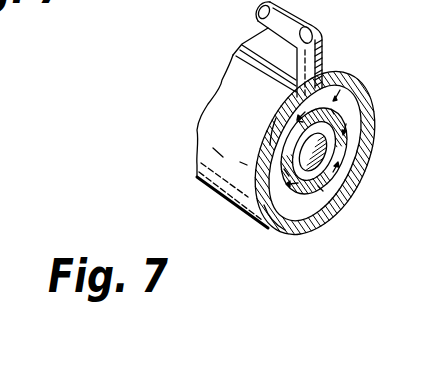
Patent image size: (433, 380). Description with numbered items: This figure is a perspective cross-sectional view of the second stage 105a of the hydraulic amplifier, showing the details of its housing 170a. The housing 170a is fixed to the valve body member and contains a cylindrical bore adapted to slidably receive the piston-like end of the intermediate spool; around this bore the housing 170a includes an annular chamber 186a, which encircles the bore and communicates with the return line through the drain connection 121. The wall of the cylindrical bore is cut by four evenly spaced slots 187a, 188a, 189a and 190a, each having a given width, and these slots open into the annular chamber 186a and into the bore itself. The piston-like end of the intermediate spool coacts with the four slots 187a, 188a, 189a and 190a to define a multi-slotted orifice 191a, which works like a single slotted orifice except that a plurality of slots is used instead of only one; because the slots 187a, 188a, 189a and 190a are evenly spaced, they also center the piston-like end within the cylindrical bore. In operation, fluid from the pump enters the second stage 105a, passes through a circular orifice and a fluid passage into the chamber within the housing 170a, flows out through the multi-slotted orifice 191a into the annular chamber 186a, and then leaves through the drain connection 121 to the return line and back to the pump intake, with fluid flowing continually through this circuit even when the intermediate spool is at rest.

The housing 170a is at (227, 72).
The drain connection 121 is at (310, 37).
The annular chamber 186a is at (341, 88).
The slot 187a is at (330, 112).
The slot 188a is at (341, 172).
The slot 189a is at (275, 219).
The slot 190a is at (278, 121).
The multi-slotted orifice 191a is at (330, 158).
The second stage 105a is at (388, 224).